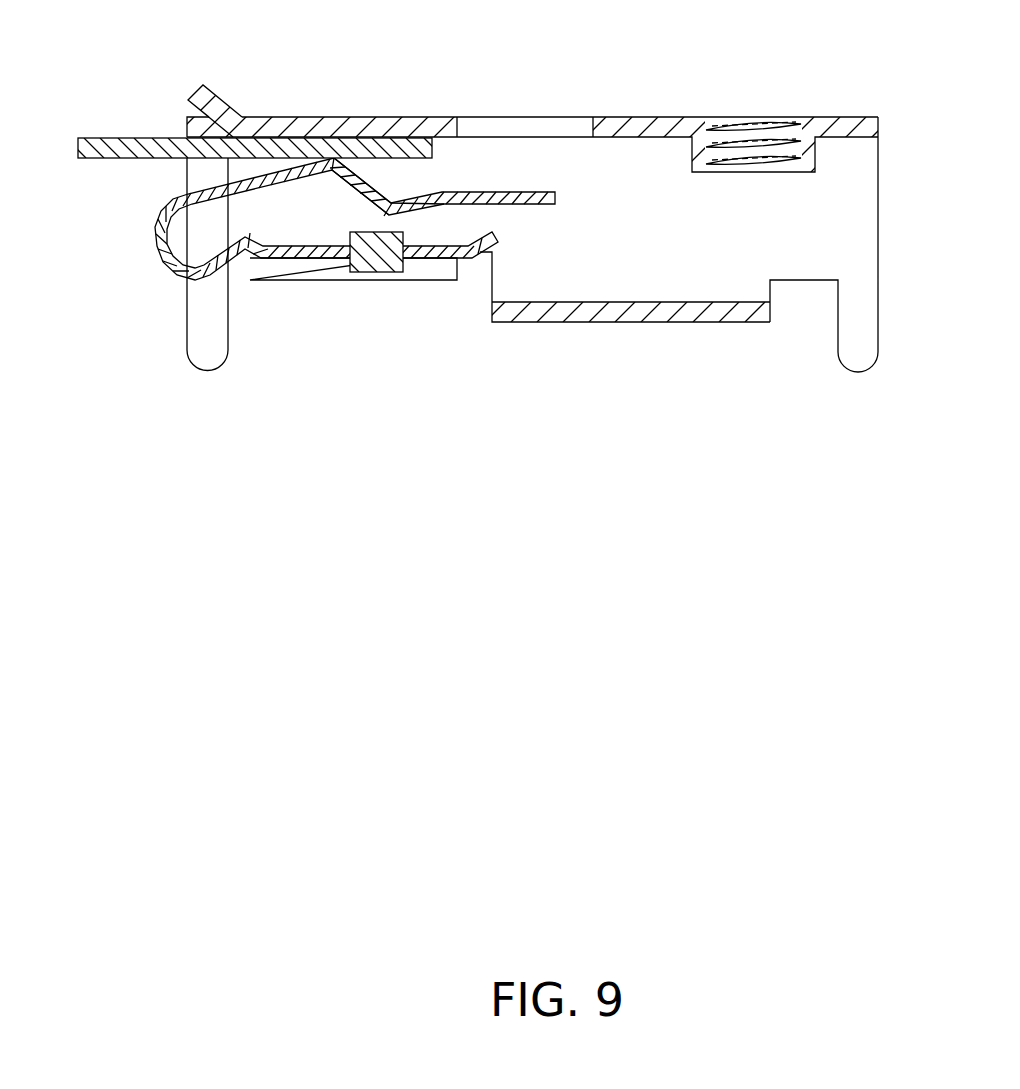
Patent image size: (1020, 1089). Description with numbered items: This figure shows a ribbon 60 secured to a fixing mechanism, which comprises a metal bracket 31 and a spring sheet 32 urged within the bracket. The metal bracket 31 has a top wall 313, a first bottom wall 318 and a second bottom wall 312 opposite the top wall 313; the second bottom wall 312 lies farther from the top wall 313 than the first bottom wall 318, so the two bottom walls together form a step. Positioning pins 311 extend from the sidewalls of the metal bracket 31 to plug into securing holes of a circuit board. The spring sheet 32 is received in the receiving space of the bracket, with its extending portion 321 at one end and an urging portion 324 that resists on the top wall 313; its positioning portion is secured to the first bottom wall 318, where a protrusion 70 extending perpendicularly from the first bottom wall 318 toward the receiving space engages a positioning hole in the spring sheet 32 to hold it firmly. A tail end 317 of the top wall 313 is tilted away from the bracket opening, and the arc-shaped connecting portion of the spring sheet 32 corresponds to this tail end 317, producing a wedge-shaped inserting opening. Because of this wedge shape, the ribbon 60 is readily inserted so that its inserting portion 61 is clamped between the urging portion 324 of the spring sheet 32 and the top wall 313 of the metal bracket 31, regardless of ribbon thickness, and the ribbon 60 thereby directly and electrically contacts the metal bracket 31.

The metal bracket 31 is at (533, 230).
The positioning pins 311 is at (860, 348).
The second bottom wall 312 is at (625, 310).
The top wall 313 is at (305, 130).
The tail end 317 is at (203, 100).
The first bottom wall 318 is at (436, 270).
The spring sheet 32 is at (313, 198).
The extending portion 321 is at (353, 185).
The urging portion 324 is at (338, 167).
The ribbon 60 is at (255, 97).
The inserting portion 61 is at (395, 147).
The protrusion 70 is at (373, 255).